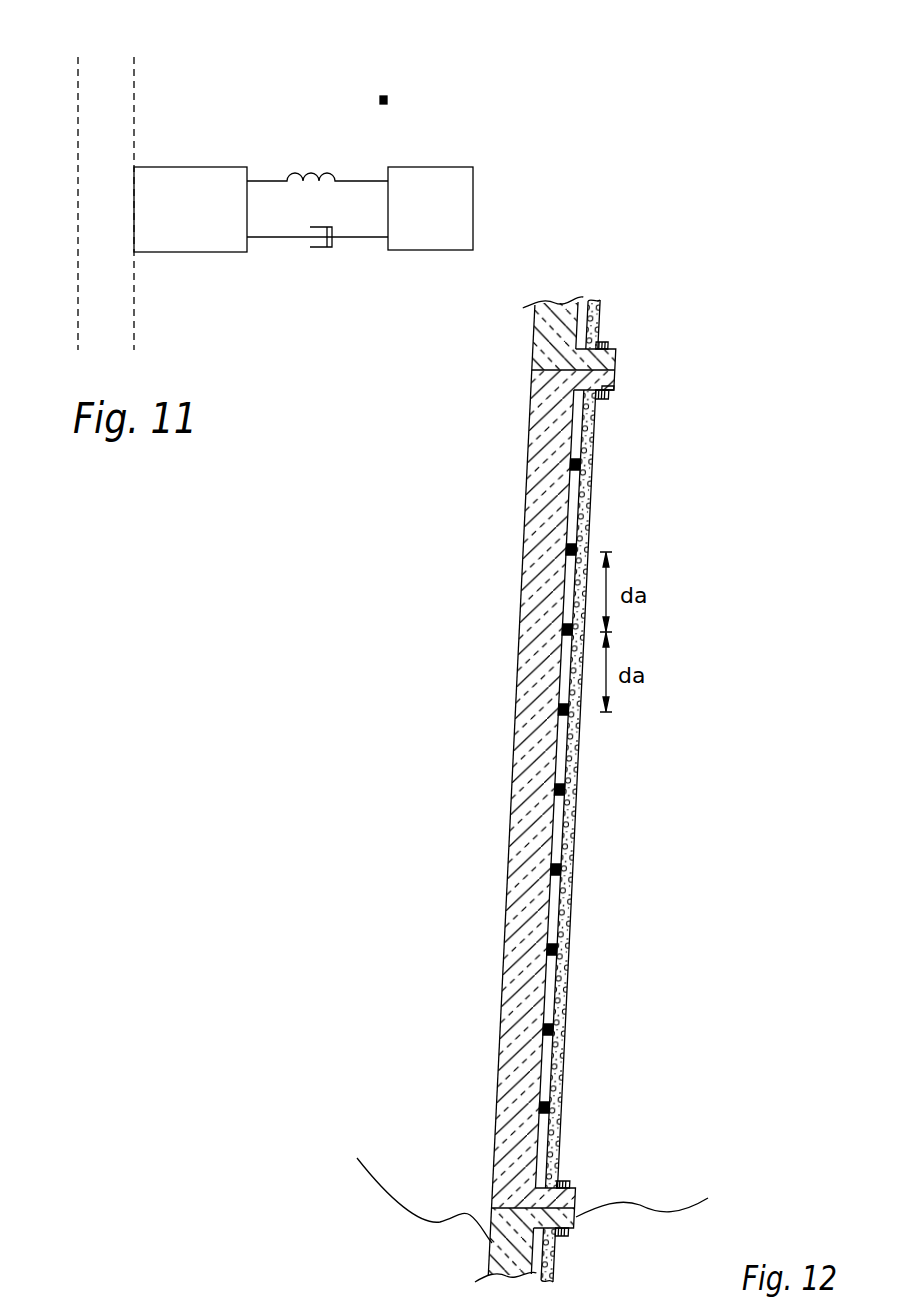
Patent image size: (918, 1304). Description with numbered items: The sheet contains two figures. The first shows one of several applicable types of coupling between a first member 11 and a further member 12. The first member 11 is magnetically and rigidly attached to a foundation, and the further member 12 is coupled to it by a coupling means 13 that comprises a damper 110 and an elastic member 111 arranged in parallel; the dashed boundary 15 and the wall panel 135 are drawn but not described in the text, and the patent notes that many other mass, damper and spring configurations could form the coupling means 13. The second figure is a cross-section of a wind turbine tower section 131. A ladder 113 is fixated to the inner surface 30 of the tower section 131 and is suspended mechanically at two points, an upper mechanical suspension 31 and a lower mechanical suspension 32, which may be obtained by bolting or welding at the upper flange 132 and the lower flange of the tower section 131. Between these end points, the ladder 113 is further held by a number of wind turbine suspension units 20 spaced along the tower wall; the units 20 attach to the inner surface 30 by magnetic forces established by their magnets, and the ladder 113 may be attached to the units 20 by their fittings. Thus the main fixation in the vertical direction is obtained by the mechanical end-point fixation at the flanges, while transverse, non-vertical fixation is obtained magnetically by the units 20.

In FIG. 11, the first member 11 is at (177, 167).
In FIG. 11, the further member 12 is at (445, 166).
In FIG. 11, the coupling means 13 is at (388, 95).
In FIG. 11, the wall 15 is at (134, 87).
In FIG. 11, the damper 110 is at (324, 180).
In FIG. 11, the elastic member 111 is at (328, 249).
In FIG. 12, the wind turbine suspension unit 20 is at (571, 548).
In FIG. 12, the inner surface 30 is at (556, 822).
In FIG. 12, the upper mechanical suspension 31 is at (617, 392).
In FIG. 12, the lower mechanical suspension 32 is at (563, 1180).
In FIG. 12, the ladder 113 is at (596, 426).
In FIG. 12, the wind turbine tower section 131 is at (582, 1190).
In FIG. 12, the upper flange 132 is at (618, 377).
In FIG. 12, the wall panel 135 is at (530, 430).